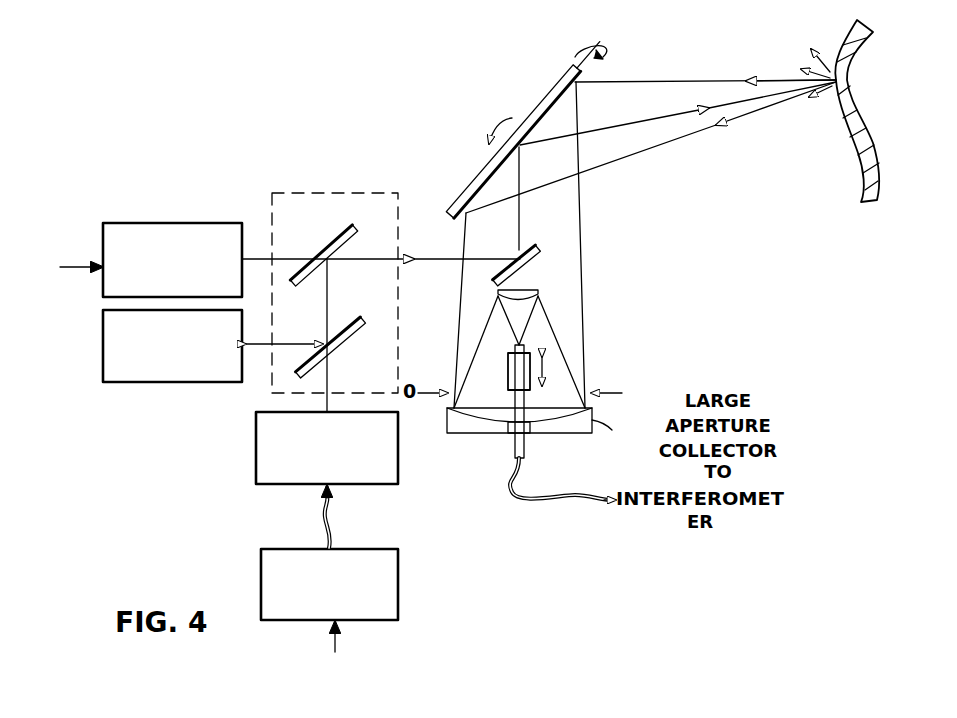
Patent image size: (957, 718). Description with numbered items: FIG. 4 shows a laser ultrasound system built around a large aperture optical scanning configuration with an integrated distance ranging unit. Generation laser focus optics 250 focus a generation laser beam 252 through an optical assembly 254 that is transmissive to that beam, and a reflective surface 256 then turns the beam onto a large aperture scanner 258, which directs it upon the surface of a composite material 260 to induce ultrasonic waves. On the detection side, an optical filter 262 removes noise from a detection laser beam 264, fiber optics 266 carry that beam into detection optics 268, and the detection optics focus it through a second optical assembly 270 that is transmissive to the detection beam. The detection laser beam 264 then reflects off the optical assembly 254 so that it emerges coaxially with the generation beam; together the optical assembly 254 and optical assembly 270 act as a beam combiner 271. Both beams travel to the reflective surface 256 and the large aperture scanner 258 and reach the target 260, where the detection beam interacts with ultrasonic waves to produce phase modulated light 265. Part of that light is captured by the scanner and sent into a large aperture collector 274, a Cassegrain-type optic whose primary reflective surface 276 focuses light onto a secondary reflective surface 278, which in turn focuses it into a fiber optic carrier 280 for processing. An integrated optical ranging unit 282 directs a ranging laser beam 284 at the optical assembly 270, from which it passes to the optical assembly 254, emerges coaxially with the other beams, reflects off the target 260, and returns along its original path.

The generation laser focus optics 250 is at (172, 260).
The generation laser beam 252 is at (84, 263).
The optical assembly 254 is at (335, 237).
The reflective surface 256 is at (540, 246).
The large aperture scanner 258 is at (452, 190).
The composite material 260 is at (862, 172).
The optical filter 262 is at (329, 584).
The detection laser beam 264 is at (700, 104).
The phase modulated light 265 is at (825, 113).
The fiber optics 266 is at (340, 539).
The detection optics 268 is at (327, 371).
The optical assembly 270 is at (365, 318).
The beam combiner 271 is at (352, 192).
The large aperture collector 274 is at (476, 444).
The primary reflective surface 276 is at (508, 430).
The secondary reflective surface 278 is at (536, 288).
The fiber optic carrier 280 is at (574, 491).
The integrated optical ranging unit 282 is at (172, 346).
The ranging laser beam 284 is at (272, 348).